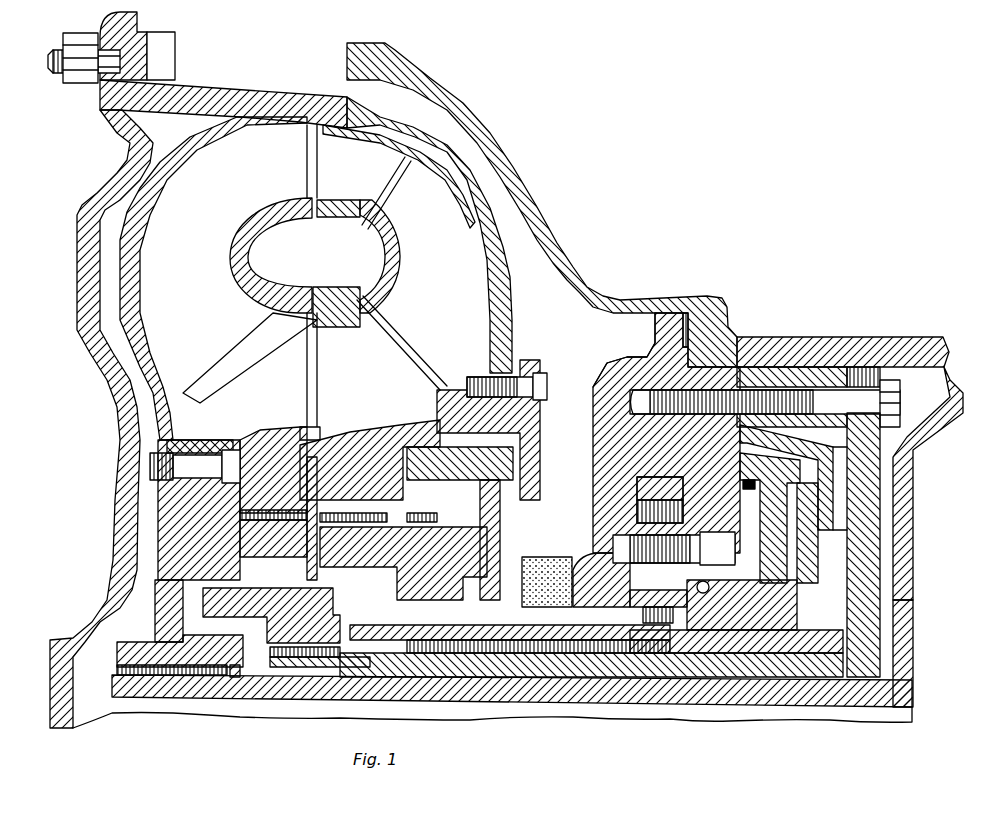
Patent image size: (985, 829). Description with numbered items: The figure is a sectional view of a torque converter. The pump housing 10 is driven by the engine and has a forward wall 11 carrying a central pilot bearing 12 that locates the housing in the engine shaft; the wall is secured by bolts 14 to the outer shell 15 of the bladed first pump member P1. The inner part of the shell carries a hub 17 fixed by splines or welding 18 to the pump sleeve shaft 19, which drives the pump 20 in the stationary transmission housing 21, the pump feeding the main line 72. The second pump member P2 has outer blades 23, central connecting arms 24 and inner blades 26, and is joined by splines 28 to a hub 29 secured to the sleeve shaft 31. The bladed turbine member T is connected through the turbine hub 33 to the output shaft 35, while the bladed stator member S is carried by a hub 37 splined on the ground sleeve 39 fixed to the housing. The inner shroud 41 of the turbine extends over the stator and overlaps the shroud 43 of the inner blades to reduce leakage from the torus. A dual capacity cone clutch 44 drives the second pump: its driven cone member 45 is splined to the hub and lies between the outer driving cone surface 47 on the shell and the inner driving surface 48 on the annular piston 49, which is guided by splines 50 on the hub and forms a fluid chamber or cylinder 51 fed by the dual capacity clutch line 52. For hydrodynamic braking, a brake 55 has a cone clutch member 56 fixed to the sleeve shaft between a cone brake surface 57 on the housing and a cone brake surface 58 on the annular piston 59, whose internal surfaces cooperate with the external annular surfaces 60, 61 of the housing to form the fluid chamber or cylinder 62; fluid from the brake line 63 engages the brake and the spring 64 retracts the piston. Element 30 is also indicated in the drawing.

The pump housing 10 is at (122, 151).
The forward wall 11 is at (113, 412).
The central pilot bearing 12 is at (83, 632).
The bolts 14 is at (168, 72).
The outer shell 15 is at (265, 95).
The turbine member T is at (192, 165).
The inner shroud 41 is at (265, 220).
The first pump member P1 is at (492, 270).
The second pump member P2 is at (353, 133).
The outer blades 23 is at (378, 185).
The central connecting arms 24 is at (350, 243).
The inner blades 26 is at (360, 328).
The shroud 43 is at (333, 312).
The outer driving cone surface 47 is at (437, 418).
The stator member S is at (267, 360).
The transmission housing 21 is at (637, 305).
The cone brake surface 57 is at (827, 380).
The driven cone member 45 is at (525, 433).
The dual capacity cone clutch 44 is at (547, 448).
The inner driving surface 48 is at (513, 470).
The annular piston 49 is at (490, 487).
The hub 17 is at (533, 487).
The pump 20 is at (617, 503).
The fluid chamber or cylinder 51 is at (490, 530).
The splines or welding 18 is at (547, 563).
The cone brake surface 58 is at (743, 432).
The annular piston 59 is at (743, 463).
The brake 55 is at (845, 471).
The cone clutch member 56 is at (833, 487).
The external annular surface 61 is at (747, 483).
The fluid chamber or cylinder 62 is at (743, 520).
The spring 64 is at (783, 493).
The brake line 63 is at (700, 570).
The pump sleeve shaft 19 is at (607, 603).
The splines 28 is at (355, 527).
The hub 29 is at (360, 560).
The bearing cap 30 is at (273, 600).
The turbine hub 33 is at (180, 633).
The hub 37 is at (273, 640).
The splines 50 is at (420, 596).
The external annular surface 60 is at (707, 640).
The main line 72 is at (763, 633).
The ground sleeve 39 is at (380, 653).
The dual capacity clutch line 52 is at (490, 627).
The sleeve shaft 31 is at (583, 640).
The output shaft 35 is at (247, 707).